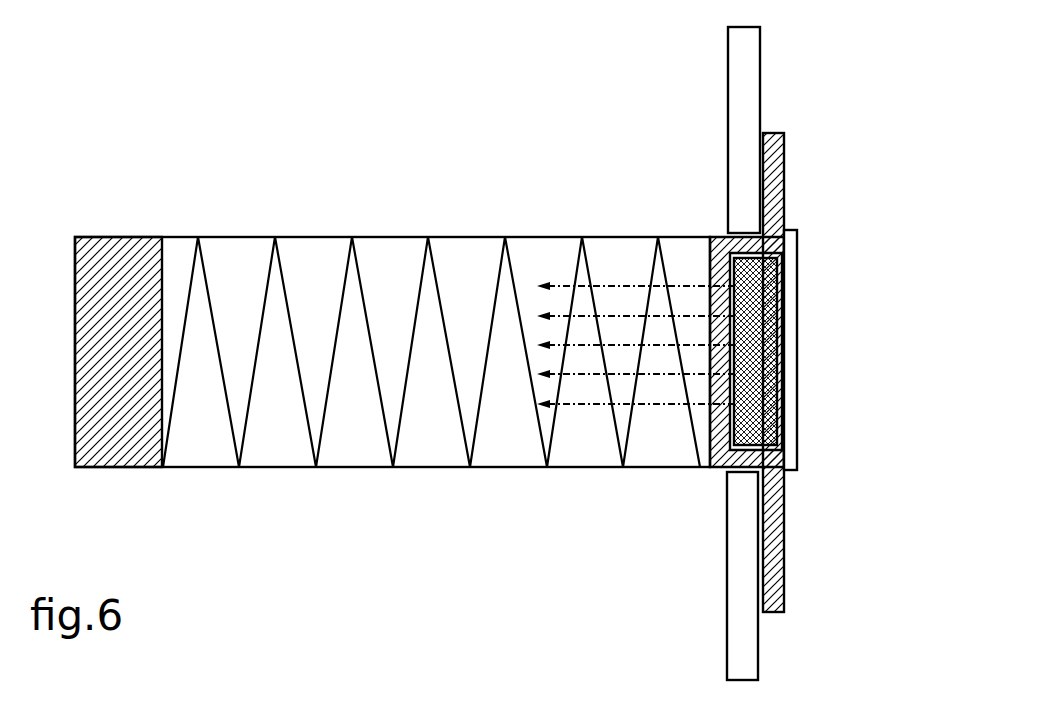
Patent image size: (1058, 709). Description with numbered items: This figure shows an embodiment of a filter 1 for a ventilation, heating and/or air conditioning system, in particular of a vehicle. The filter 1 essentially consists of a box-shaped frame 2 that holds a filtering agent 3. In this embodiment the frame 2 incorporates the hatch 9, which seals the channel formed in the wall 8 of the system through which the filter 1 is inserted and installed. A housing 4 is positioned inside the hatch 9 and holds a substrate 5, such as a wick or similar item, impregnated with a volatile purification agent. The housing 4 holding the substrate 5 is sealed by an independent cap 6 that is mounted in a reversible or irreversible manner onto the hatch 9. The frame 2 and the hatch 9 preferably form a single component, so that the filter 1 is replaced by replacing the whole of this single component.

The filter 1 is at (437, 193).
The frame 2 is at (111, 237).
The filtering agent 3 is at (551, 408).
The housing 4 is at (718, 268).
The substrate 5 is at (778, 318).
The cap 6 is at (797, 402).
The wall 8 is at (760, 67).
The hatch 9 is at (784, 545).